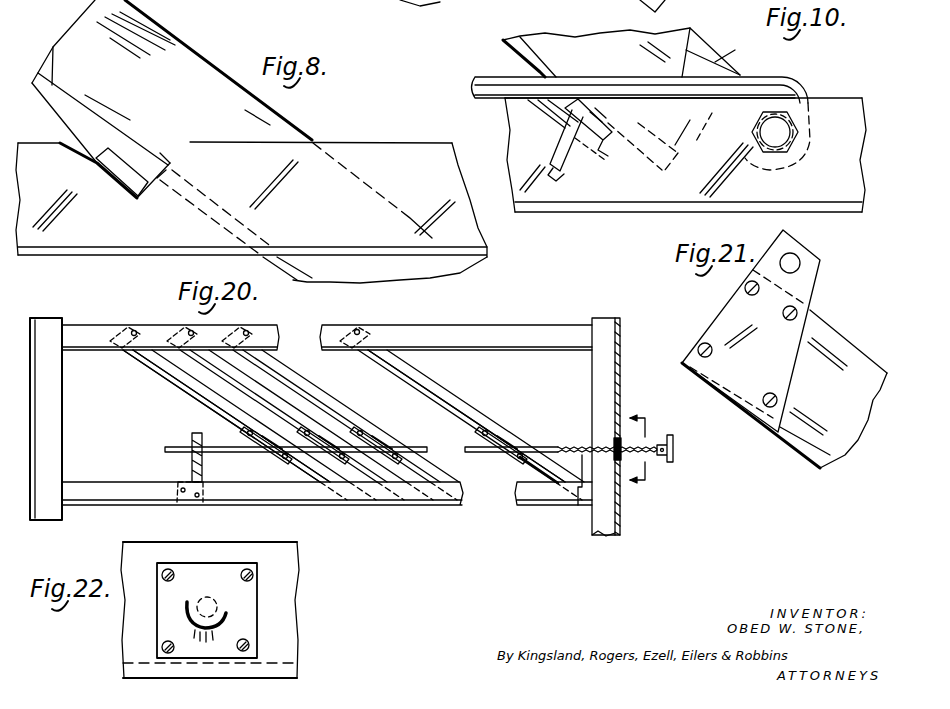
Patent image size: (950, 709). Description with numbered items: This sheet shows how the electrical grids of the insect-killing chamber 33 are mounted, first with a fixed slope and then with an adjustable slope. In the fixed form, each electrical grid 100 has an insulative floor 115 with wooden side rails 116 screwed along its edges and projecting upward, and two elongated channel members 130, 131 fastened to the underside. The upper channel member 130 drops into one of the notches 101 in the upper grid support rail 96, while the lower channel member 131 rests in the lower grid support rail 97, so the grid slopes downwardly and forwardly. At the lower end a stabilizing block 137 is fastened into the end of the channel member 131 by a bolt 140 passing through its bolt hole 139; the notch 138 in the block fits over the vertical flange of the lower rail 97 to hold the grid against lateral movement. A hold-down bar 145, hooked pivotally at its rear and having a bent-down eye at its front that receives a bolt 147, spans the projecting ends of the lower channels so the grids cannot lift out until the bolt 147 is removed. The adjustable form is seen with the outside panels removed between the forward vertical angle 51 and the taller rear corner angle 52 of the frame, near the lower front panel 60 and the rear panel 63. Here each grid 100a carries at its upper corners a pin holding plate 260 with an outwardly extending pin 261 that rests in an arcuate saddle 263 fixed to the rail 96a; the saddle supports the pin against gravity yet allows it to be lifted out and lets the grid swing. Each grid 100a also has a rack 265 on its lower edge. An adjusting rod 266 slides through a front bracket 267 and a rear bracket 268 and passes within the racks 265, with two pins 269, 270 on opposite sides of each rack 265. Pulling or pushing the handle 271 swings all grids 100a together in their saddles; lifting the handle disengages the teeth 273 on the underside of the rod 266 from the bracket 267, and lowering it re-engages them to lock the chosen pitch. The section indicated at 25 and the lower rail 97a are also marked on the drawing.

In FIG. 20, the section line 25 is at (649, 450).
In FIG. 20, the insect-killing chamber 33 is at (468, 394).
In FIG. 20, the vertical angle 51 is at (607, 527).
In FIG. 20, the rear corner angle 52 is at (47, 437).
In FIG. 20, the lower front panel 60 is at (622, 515).
In FIG. 20, the rear panel 63 is at (33, 318).
In FIG. 8, the upper grid support rail 96 is at (368, 143).
In FIG. 20, the rail 96a is at (278, 333).
In FIG. 22, the rail 96a is at (130, 570).
In FIG. 10, the lower grid support rail 97 is at (840, 185).
In FIG. 20, the bottom rail 97a is at (462, 505).
In FIG. 8, the electrical grid 100 is at (292, 124).
In FIG. 10, the electrical grid 100 is at (692, 26).
In FIG. 20, the grid 100a is at (416, 373).
In FIG. 21, the grid 100a is at (822, 318).
In FIG. 8, the notch 101 is at (167, 157).
In FIG. 10, the notch 101 is at (548, 110).
In FIG. 8, the floor 115 is at (52, 85).
In FIG. 10, the floor 115 is at (520, 64).
In FIG. 20, the floor 115 is at (168, 390).
In FIG. 21, the floor 115 is at (813, 450).
In FIG. 8, the side rail 116 is at (207, 66).
In FIG. 10, the side rail 116 is at (714, 63).
In FIG. 20, the side rail 116 is at (162, 370).
In FIG. 21, the side rail 116 is at (823, 343).
In FIG. 8, the channel member 130 is at (97, 152).
In FIG. 10, the channel member 131 is at (565, 128).
In FIG. 10, the stabilizing block 137 is at (565, 140).
In FIG. 10, the notch 138 is at (620, 130).
In FIG. 10, the bolt hole 139 is at (586, 150).
In FIG. 10, the bolt 140 is at (598, 113).
In FIG. 10, the hold-down bar 145 is at (690, 58).
In FIG. 10, the bolt 147 is at (777, 127).
In FIG. 20, the pin holding plate 260 is at (128, 326).
In FIG. 21, the pin holding plate 260 is at (740, 320).
In FIG. 20, the pin 261 is at (147, 300).
In FIG. 21, the pin 261 is at (800, 262).
In FIG. 22, the pin 261 is at (217, 605).
In FIG. 22, the arcuate saddle 263 is at (193, 612).
In FIG. 20, the rack 265 is at (381, 437).
In FIG. 20, the adjusting rod 266 is at (178, 447).
In FIG. 20, the front bracket 267 is at (615, 443).
In FIG. 20, the rear bracket 268 is at (192, 460).
In FIG. 20, the pin 269 is at (263, 452).
In FIG. 20, the pin 270 is at (282, 455).
In FIG. 20, the handle 271 is at (678, 452).
In FIG. 20, the teeth 273 is at (582, 460).